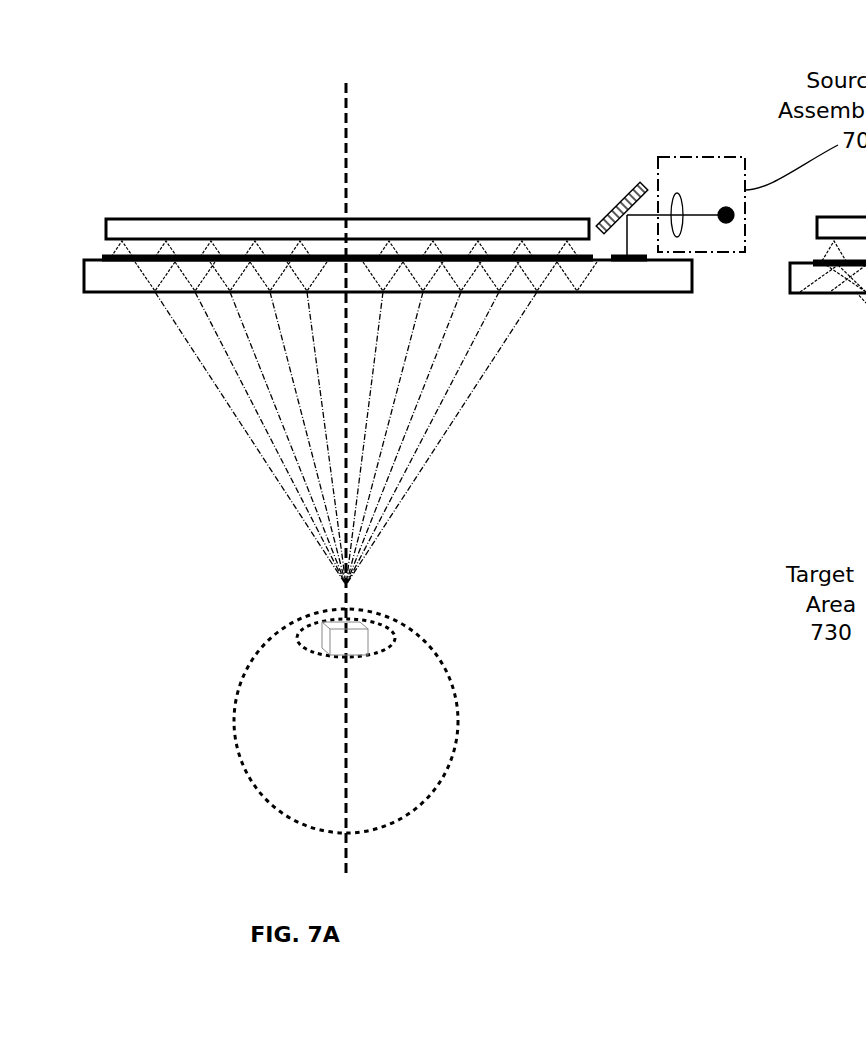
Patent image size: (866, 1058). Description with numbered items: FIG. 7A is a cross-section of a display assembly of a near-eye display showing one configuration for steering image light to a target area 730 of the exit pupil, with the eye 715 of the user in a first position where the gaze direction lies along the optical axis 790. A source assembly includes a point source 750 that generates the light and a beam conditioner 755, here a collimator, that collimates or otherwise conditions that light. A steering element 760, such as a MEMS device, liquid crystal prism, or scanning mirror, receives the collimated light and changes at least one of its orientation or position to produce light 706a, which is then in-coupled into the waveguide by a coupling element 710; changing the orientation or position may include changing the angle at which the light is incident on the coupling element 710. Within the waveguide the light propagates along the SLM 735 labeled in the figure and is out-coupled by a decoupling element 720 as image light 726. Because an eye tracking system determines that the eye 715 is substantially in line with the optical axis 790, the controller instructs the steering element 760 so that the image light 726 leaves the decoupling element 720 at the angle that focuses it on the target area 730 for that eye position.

The decoupling element 720 is at (110, 255).
The SLM 735 is at (393, 236).
The coupling element 710 is at (627, 262).
The steering element 760 is at (628, 195).
The light 706a is at (625, 247).
The beam conditioner 755 is at (677, 193).
The point source 750 is at (730, 223).
The image light 726 is at (262, 455).
The optical axis 790 is at (348, 872).
The eye 715 is at (242, 760).
The target area 730 is at (357, 640).